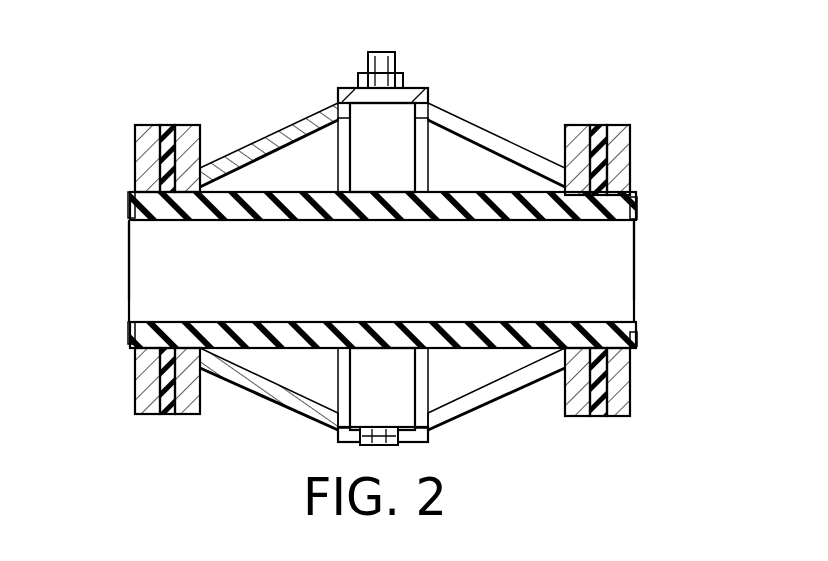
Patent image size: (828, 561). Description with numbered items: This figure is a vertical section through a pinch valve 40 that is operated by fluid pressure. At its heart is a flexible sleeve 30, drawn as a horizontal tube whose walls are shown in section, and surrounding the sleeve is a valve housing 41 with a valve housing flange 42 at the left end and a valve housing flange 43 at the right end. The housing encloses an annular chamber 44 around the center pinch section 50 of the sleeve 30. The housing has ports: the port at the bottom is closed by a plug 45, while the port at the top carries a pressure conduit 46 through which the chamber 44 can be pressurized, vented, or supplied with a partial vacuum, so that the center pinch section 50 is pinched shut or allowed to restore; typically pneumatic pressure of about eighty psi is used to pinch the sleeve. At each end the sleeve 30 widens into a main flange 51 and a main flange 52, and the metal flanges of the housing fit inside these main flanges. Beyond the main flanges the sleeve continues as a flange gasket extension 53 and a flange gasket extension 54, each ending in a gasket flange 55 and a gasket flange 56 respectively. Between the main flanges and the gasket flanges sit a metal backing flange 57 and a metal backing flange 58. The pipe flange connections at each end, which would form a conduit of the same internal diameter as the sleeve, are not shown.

The sleeve 30 is at (641, 284).
The valve 40 is at (563, 104).
The valve housing 41 is at (470, 123).
The valve housing flange 42 is at (202, 146).
The valve housing flange 43 is at (618, 134).
The annular chamber 44 is at (311, 155).
The plug 45 is at (382, 446).
The pressure conduit 46 is at (396, 62).
The center pinch section 50 is at (384, 223).
The main flange 51 is at (132, 134).
The main flange 52 is at (632, 138).
The flange gasket extension 53 is at (130, 222).
The flange gasket extension 54 is at (635, 246).
The gasket flange 55 is at (130, 196).
The gasket flange 56 is at (637, 210).
The metal backing flange 57 is at (137, 140).
The metal backing flange 58 is at (632, 157).